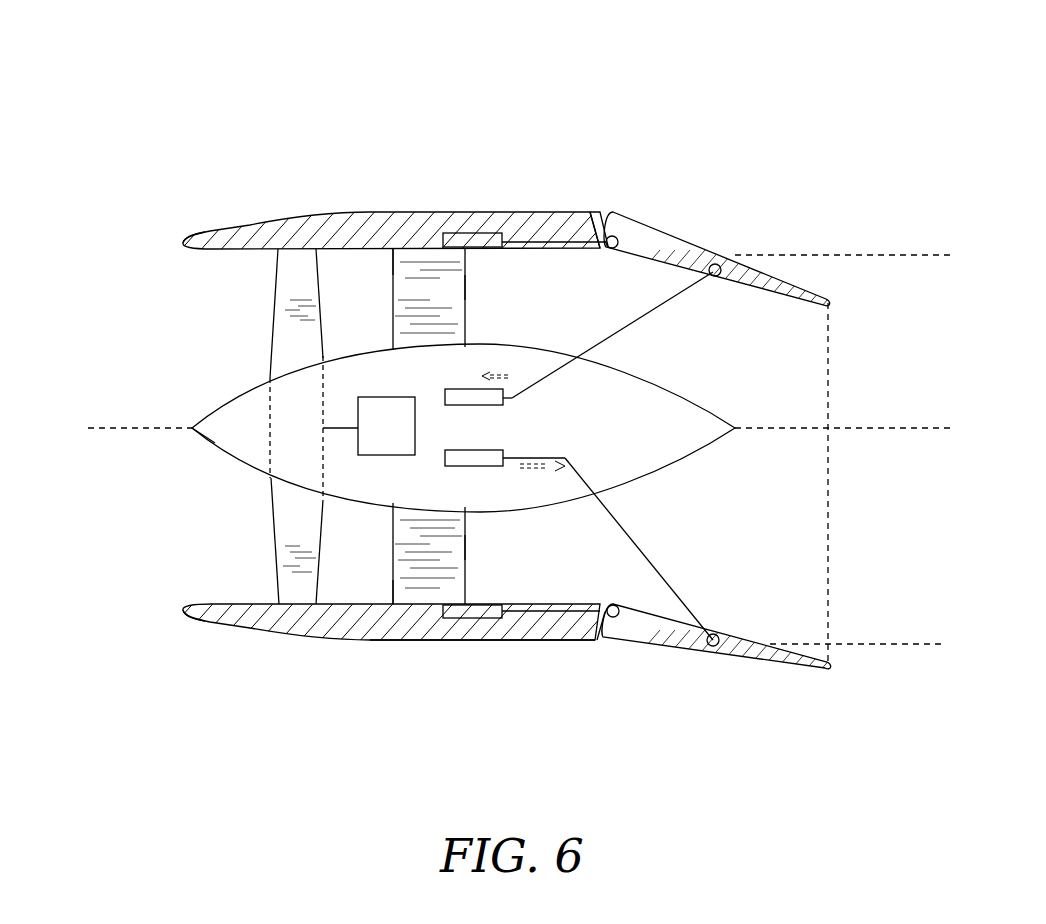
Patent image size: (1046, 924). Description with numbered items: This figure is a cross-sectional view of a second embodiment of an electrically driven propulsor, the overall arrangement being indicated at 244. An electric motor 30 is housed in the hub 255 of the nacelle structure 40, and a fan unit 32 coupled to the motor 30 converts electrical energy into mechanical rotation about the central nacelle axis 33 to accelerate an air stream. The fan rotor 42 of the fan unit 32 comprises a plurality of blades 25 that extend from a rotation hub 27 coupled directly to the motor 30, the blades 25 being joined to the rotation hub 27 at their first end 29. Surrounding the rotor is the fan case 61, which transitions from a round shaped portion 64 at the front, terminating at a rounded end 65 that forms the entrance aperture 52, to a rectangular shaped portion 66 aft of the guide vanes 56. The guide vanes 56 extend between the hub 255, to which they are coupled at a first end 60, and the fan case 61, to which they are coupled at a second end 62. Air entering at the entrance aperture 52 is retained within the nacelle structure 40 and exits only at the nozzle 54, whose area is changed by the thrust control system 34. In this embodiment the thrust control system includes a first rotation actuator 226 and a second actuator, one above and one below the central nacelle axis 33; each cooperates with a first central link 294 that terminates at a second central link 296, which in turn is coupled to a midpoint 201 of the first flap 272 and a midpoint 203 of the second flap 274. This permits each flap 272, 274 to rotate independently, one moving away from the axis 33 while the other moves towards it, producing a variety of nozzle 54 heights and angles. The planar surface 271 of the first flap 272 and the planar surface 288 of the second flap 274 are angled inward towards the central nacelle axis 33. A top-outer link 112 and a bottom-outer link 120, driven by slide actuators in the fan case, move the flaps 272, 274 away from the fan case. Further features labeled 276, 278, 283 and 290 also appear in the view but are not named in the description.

The propulsion system 244 is at (502, 387).
The first rotation actuator 226 is at (426, 406).
The round shaped portion 64 is at (394, 456).
The rounded end 65 is at (184, 247).
The rectangular shaped portion 66 is at (394, 680).
The fan case 61 is at (365, 690).
The bottom-outer link 120 is at (536, 612).
The top-outer link 112 is at (587, 212).
The planar surface 271 is at (601, 213).
The hinge 278 is at (613, 214).
The planar surface 288 is at (602, 630).
The first flap 272 is at (698, 387).
The midpoint 201 is at (722, 272).
The second central link 296 is at (670, 292).
The second flap 274 is at (742, 681).
The midpoint 203 is at (712, 650).
The hub 255 is at (452, 394).
The electric motor 30 is at (370, 397).
The rotation hub 27 is at (200, 436).
The actuator 276 is at (462, 389).
The first central link 294 is at (517, 428).
The blades 25 is at (260, 426).
The first end 29 is at (268, 480).
The first end 60 is at (430, 426).
The guide vanes 56 is at (466, 290).
The second end 62 is at (393, 258).
The fan unit 32 is at (157, 342).
The fan rotor 42 is at (242, 357).
The entrance aperture 52 is at (150, 449).
The central nacelle axis 33 is at (861, 428).
The thrust control system 34 is at (845, 208).
The reference line 283 is at (888, 256).
The nozzle 54 is at (832, 504).
The lower reference line 290 is at (900, 644).
The nacelle structure 40 is at (282, 676).